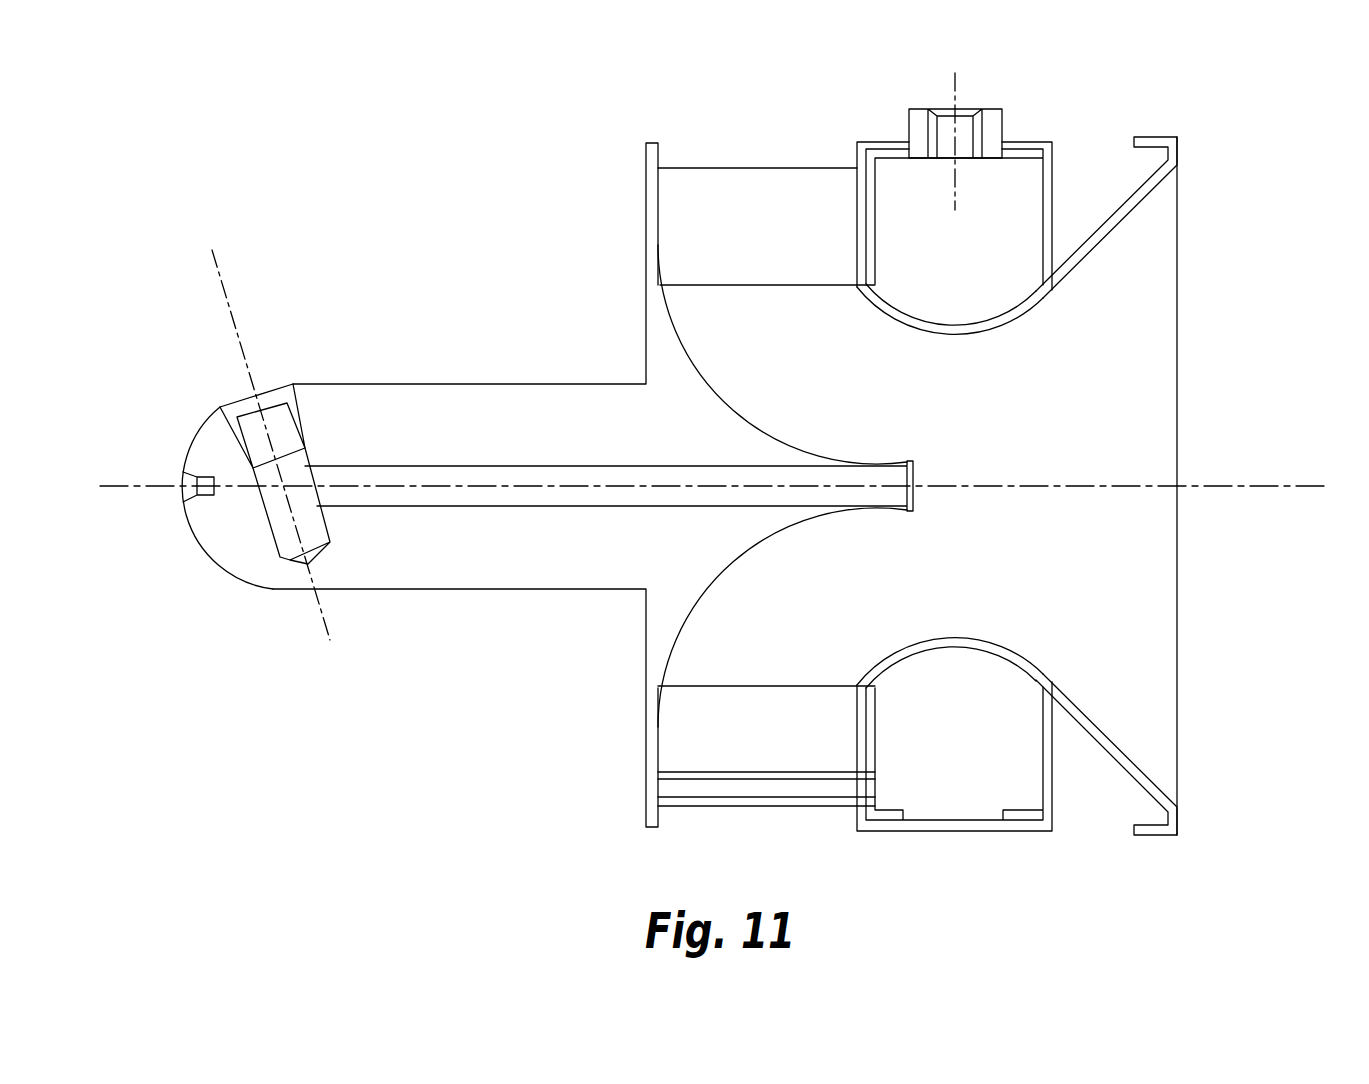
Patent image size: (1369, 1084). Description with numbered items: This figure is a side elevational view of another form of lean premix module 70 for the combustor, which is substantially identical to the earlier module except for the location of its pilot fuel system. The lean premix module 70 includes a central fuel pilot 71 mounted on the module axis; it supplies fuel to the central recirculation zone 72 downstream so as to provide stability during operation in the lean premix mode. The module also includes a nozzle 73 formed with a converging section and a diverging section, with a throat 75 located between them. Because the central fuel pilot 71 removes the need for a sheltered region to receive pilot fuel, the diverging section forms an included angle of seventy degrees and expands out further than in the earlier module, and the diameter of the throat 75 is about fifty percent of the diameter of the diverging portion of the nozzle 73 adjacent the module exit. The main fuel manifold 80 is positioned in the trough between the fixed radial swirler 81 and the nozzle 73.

The lean premix module 70 is at (1205, 145).
The central fuel pilot 71 is at (698, 368).
The central recirculation zone 72 is at (1112, 430).
The nozzle 73 is at (1057, 270).
The throat 75 is at (976, 638).
The main fuel manifold 80 is at (903, 168).
The fixed radial swirler 81 is at (714, 183).